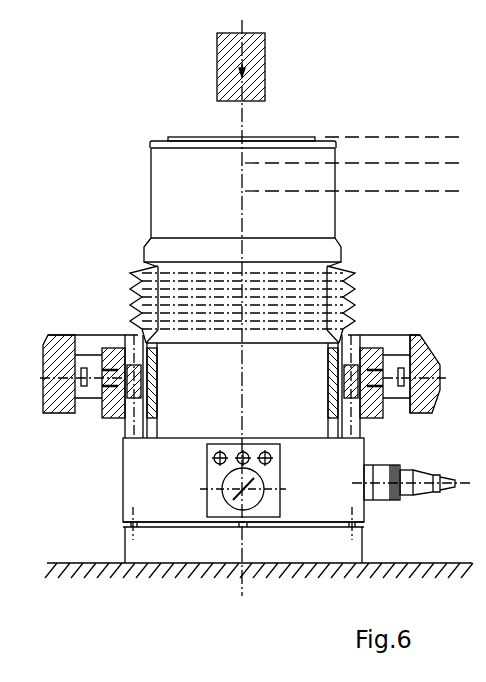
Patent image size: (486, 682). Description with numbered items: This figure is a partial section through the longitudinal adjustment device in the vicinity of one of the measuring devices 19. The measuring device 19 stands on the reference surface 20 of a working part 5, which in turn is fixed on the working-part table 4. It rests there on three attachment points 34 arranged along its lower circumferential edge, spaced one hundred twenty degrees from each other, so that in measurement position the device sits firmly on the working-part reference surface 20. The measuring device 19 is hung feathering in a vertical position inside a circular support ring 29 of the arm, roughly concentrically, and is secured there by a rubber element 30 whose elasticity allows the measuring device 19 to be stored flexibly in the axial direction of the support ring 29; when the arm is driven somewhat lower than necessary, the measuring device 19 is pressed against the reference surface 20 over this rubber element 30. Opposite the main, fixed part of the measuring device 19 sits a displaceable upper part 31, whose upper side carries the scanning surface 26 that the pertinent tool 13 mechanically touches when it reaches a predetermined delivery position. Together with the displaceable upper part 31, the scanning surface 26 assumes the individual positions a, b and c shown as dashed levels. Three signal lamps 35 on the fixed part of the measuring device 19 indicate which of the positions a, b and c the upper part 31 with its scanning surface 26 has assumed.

The tool 13 is at (258, 74).
The scanning surface 26 is at (305, 136).
The displaceable upper part 31 is at (320, 228).
The position a is at (402, 137).
The position b is at (363, 163).
The position c is at (362, 191).
The measuring device 19 is at (345, 346).
The support ring 29 is at (95, 342).
The rubber element 30 is at (94, 392).
The signal lamps 35 is at (264, 452).
The reference surface 20 is at (178, 522).
The working part 5 is at (141, 553).
The attachment points 34 is at (352, 529).
The working-part table 4 is at (441, 562).